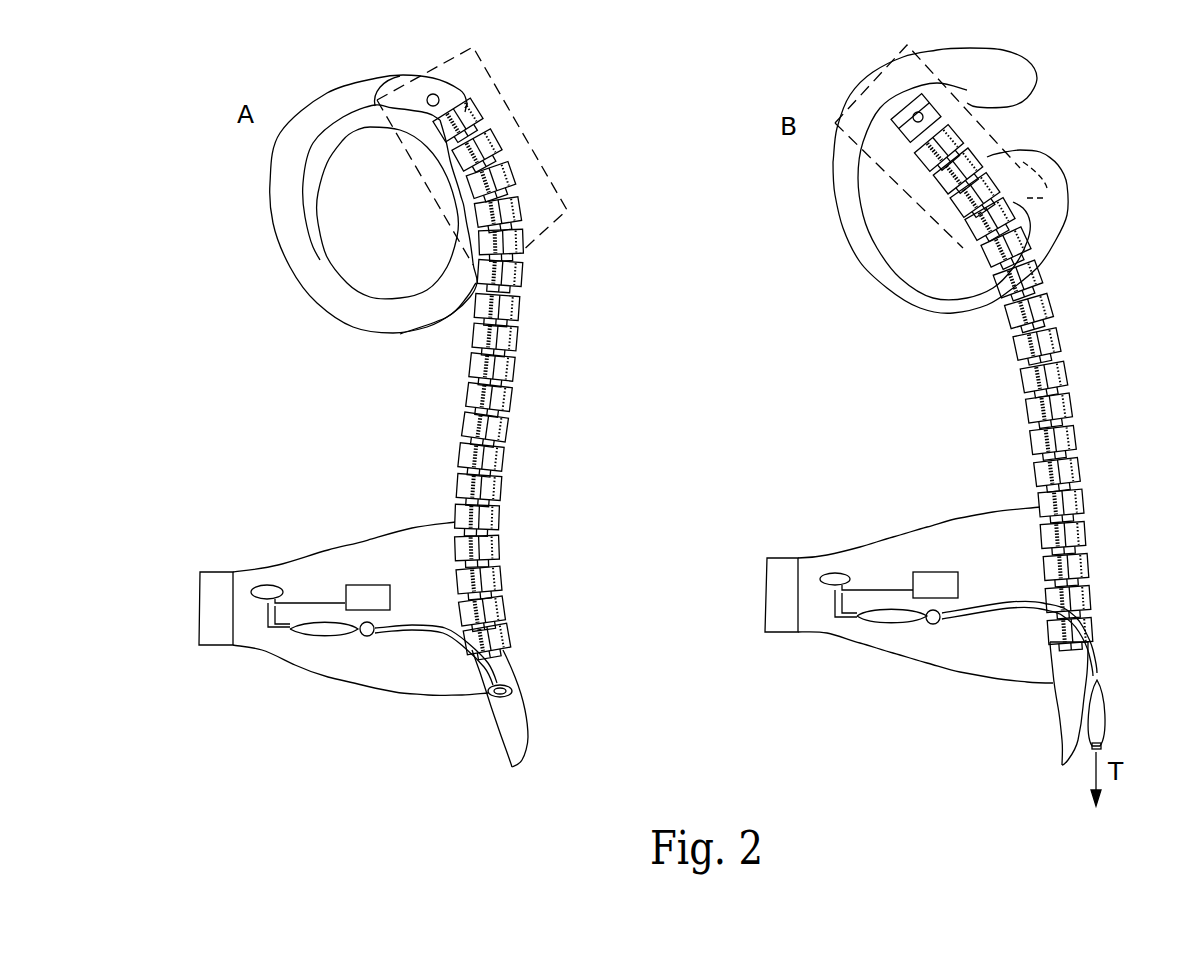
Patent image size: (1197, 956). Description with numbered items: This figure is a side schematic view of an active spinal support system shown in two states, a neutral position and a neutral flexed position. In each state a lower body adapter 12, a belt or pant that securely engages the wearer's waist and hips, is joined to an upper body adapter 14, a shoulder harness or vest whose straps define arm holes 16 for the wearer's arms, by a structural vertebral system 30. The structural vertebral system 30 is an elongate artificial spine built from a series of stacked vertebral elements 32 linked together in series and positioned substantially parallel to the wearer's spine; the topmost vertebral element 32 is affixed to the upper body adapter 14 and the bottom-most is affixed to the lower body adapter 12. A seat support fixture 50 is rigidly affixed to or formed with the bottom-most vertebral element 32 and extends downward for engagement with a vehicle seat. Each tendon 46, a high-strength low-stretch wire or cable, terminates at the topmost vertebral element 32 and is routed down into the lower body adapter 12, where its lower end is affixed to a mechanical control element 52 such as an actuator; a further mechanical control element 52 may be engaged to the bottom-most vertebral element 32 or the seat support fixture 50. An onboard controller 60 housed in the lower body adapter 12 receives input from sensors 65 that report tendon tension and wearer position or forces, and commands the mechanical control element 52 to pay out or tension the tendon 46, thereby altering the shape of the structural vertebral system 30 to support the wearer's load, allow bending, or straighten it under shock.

The lower body adapter 12 is at (965, 540).
The upper body adapter 14 is at (1050, 198).
The arm holes 16 is at (383, 221).
The structural vertebral system 30 is at (543, 308).
The vertebral elements 32 is at (505, 435).
The tendon 46 is at (412, 630).
The seat support fixture 50 is at (530, 745).
The mechanical control element 52 is at (308, 638).
The onboard controller 60 is at (388, 598).
The sensors 65 is at (441, 98).